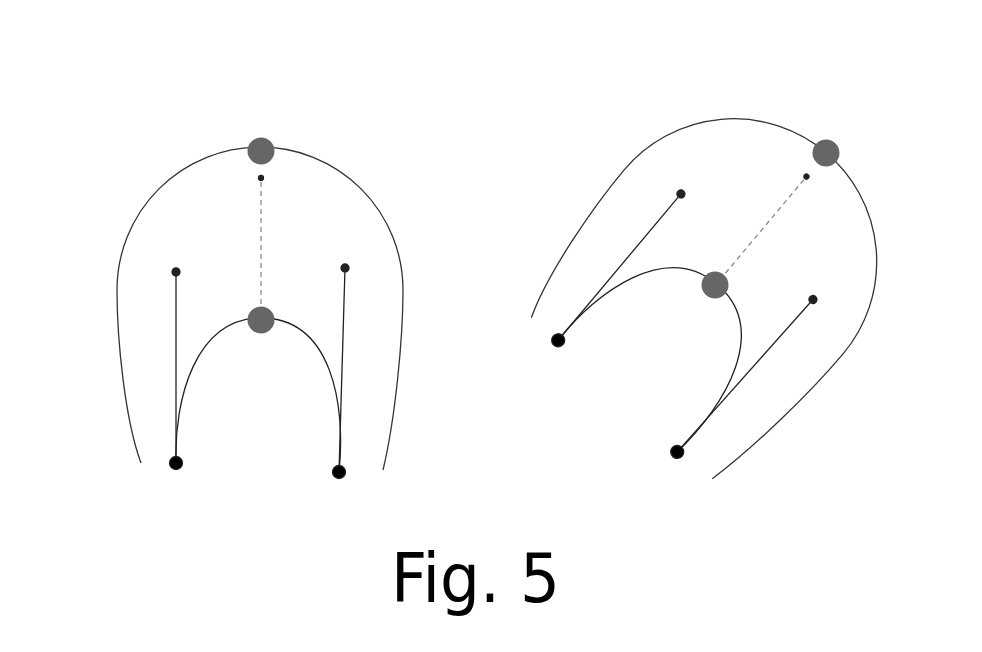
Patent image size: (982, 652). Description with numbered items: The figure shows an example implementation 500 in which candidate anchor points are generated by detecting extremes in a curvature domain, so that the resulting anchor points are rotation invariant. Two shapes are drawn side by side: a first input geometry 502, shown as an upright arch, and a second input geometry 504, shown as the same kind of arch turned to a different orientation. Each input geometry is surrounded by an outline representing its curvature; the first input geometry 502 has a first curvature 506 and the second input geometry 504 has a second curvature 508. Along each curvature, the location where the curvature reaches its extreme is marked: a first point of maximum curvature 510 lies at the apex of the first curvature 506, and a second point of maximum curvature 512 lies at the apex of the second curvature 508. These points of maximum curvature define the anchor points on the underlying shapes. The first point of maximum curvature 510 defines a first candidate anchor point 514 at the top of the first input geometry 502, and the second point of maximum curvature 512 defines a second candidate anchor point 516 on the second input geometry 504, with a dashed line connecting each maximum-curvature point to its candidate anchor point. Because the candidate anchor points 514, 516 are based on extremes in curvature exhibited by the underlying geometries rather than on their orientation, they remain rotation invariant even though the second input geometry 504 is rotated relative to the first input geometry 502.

The example implementation 500 is at (157, 85).
The first input geometry 502 is at (192, 381).
The second input geometry 504 is at (622, 283).
The first curvature 506 is at (166, 196).
The second curvature 508 is at (673, 137).
The first point of maximum curvature 510 is at (274, 144).
The second point of maximum curvature 512 is at (833, 150).
The first candidate anchor point 514 is at (263, 316).
The second candidate anchor point 516 is at (728, 283).